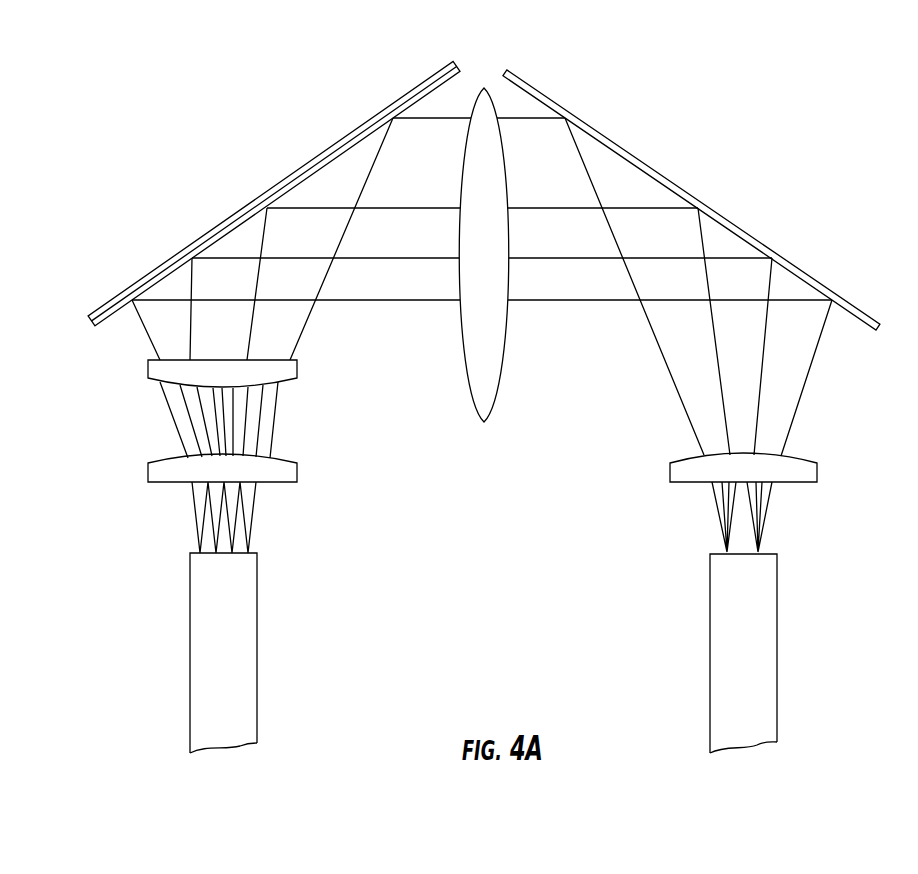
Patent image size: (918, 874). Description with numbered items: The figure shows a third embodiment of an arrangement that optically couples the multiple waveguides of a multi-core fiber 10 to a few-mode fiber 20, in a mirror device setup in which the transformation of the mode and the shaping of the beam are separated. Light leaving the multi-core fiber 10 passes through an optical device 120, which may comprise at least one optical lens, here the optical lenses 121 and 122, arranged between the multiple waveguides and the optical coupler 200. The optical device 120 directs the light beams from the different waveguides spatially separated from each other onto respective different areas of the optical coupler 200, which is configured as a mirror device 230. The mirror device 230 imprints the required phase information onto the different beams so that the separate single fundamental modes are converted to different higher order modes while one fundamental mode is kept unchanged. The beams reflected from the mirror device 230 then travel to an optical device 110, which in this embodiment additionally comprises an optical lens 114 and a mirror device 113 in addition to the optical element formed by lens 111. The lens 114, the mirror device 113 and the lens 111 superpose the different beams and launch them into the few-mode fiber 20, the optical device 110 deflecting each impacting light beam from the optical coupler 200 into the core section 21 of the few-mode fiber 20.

The multi-core fiber 10 is at (190, 650).
The few-mode fiber 20 is at (772, 653).
The core section 21 is at (742, 591).
The optical device 110 is at (690, 301).
The optical element 111 is at (780, 455).
The mirror device 113 is at (667, 173).
The optical lens 114 is at (495, 73).
The optical device 120 is at (202, 429).
The optical lens 121 is at (287, 472).
The optical lens 122 is at (287, 368).
The optical coupler 200 is at (274, 184).
The mirror device 230 is at (283, 178).